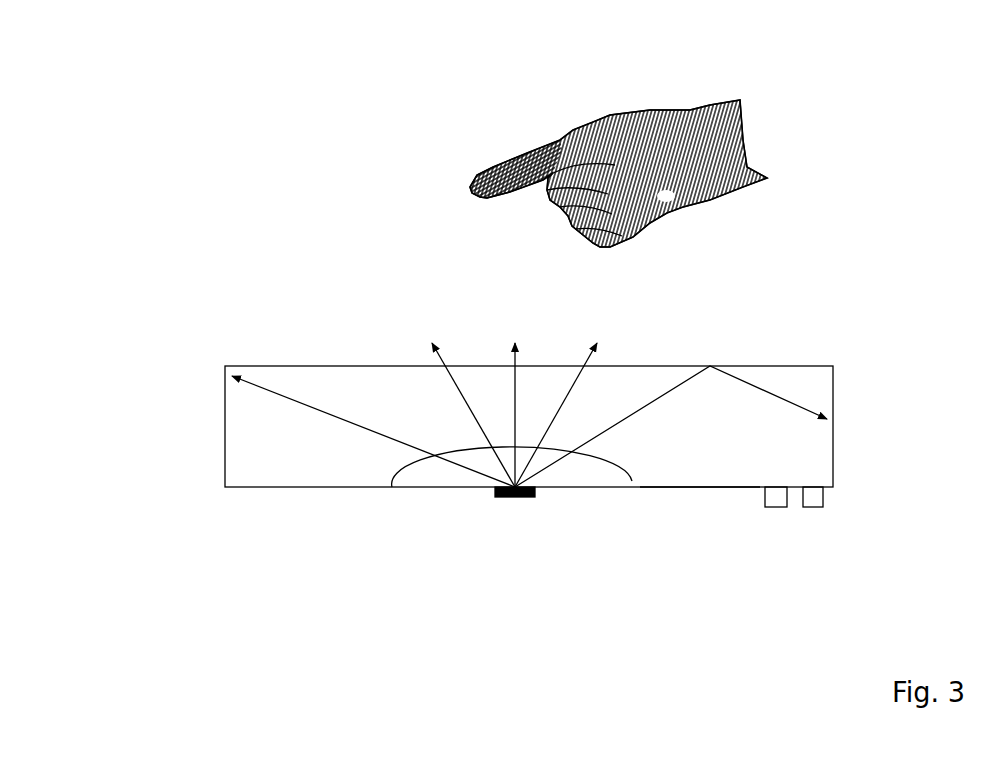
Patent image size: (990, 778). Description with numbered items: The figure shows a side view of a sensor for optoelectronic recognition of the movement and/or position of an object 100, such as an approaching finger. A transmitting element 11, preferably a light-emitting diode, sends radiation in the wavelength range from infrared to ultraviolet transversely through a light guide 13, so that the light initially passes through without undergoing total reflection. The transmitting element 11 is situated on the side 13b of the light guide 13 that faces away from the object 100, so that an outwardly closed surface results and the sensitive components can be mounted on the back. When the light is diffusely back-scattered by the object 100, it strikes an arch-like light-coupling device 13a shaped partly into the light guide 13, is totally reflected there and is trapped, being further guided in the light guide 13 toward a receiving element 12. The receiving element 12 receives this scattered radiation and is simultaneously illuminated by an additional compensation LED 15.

The object 100 is at (670, 110).
The light guide 13 is at (250, 470).
The light-coupling device 13a is at (410, 478).
The side of the light guide 13b is at (673, 490).
The transmitting element 11 is at (517, 498).
The compensation LED 15 is at (774, 497).
The receiving element 12 is at (811, 497).